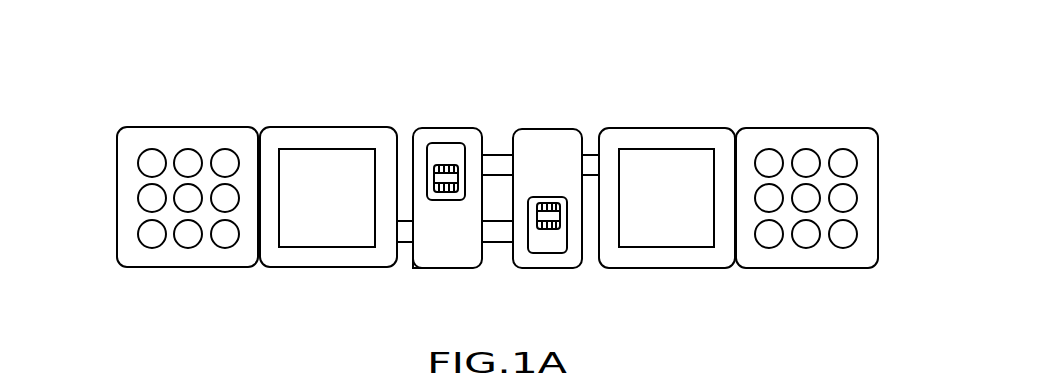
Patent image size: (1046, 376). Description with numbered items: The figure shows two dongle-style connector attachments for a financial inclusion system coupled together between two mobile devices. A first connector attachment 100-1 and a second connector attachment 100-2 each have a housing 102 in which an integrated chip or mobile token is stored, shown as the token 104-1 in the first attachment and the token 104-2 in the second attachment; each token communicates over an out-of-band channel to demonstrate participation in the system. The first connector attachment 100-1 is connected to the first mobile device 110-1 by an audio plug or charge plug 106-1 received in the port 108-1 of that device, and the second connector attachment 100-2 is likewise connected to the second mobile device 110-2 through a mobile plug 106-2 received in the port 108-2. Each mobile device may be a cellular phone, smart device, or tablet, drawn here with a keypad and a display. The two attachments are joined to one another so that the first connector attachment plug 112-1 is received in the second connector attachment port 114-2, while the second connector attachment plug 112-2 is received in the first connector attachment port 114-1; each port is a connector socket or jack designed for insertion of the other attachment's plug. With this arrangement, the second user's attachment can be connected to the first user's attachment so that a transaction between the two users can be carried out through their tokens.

The first connector attachment 100-1 is at (444, 112).
The second connector attachment 100-2 is at (581, 153).
The housing 102 is at (438, 268).
The token 104-1 is at (428, 138).
The token 104-2 is at (560, 255).
The audio plug or charge plug 106-1 is at (403, 243).
The mobile plug 106-2 is at (598, 157).
The port 108-1 is at (398, 233).
The port 108-2 is at (605, 163).
The first mobile device 110-1 is at (118, 138).
The second mobile device 110-2 is at (879, 196).
The first connector attachment plug 112-1 is at (513, 243).
The second connector attachment plug 112-2 is at (503, 155).
The first connector attachment port 114-1 is at (483, 156).
The second connector attachment port 114-2 is at (514, 230).